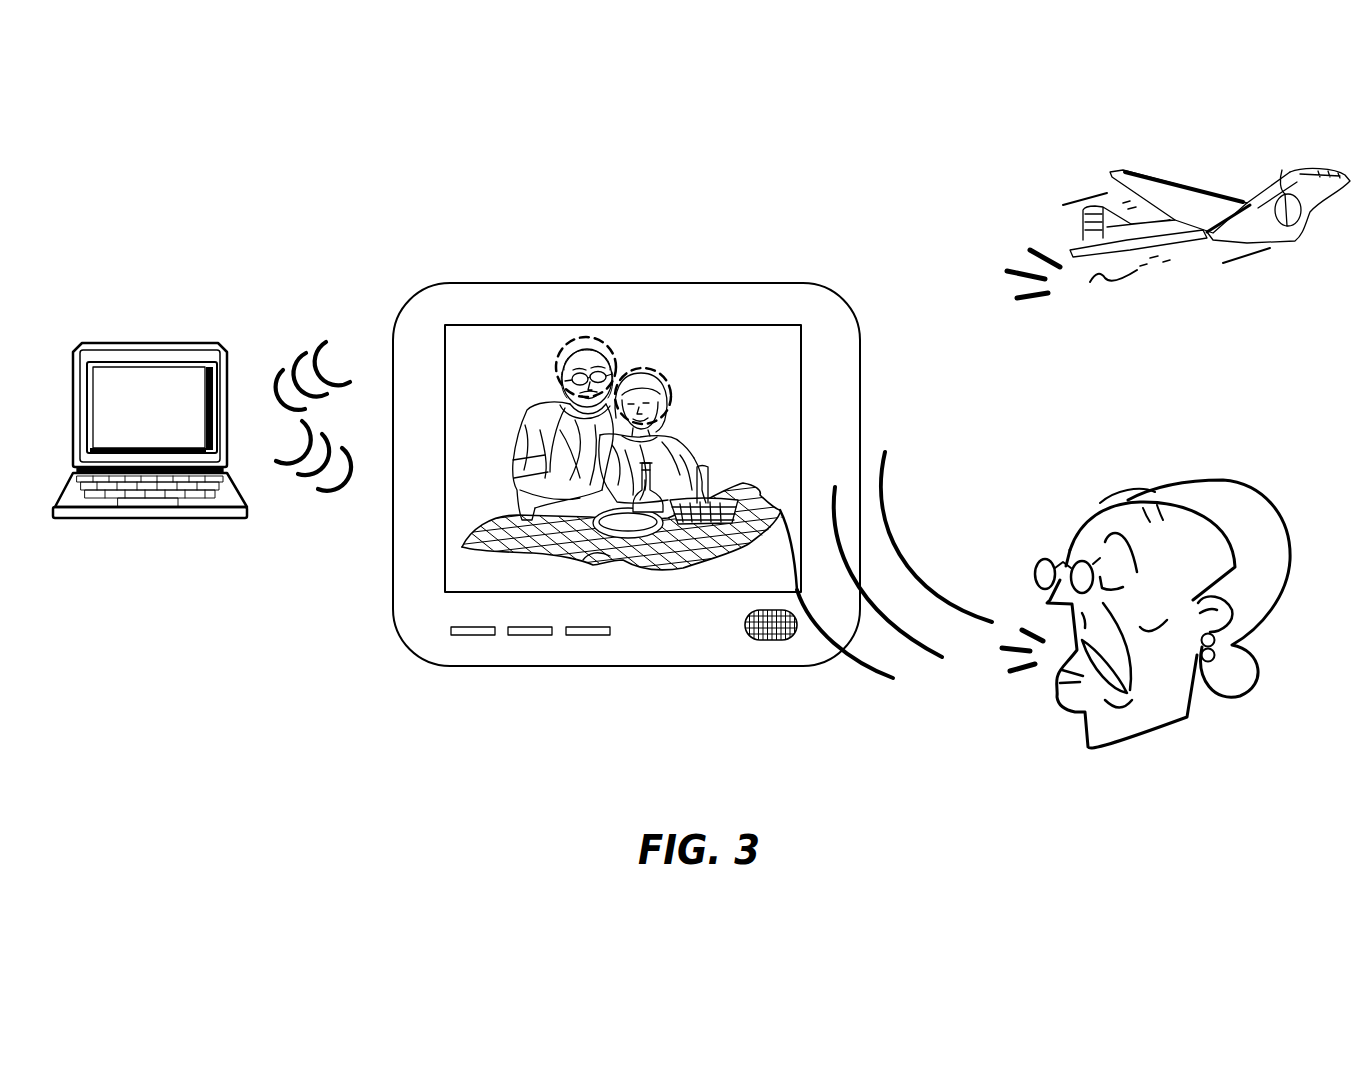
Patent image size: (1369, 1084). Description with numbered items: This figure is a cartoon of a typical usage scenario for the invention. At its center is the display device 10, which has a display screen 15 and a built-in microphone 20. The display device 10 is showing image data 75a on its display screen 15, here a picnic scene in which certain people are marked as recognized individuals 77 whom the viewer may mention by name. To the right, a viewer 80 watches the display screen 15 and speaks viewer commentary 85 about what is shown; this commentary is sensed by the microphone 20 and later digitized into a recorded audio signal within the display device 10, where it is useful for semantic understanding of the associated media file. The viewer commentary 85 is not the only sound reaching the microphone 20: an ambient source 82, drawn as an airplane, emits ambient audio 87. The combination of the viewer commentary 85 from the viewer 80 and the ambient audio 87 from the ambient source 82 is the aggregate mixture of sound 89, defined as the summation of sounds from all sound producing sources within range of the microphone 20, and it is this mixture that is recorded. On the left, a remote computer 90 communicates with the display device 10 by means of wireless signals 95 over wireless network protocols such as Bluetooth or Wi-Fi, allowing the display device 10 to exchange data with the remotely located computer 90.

The display device 10 is at (393, 605).
The display screen 15 is at (608, 439).
The microphone 20 is at (773, 643).
The image data 75a is at (686, 441).
The recognized individuals 77 is at (640, 362).
The viewer 80 is at (1177, 480).
The ambient source 82 is at (1288, 247).
The viewer commentary 85 is at (1017, 623).
The ambient audio 87 is at (1013, 287).
The aggregate mixture of sound 89 is at (868, 672).
The remote computer 90 is at (150, 343).
The wireless signals 95 is at (303, 352).